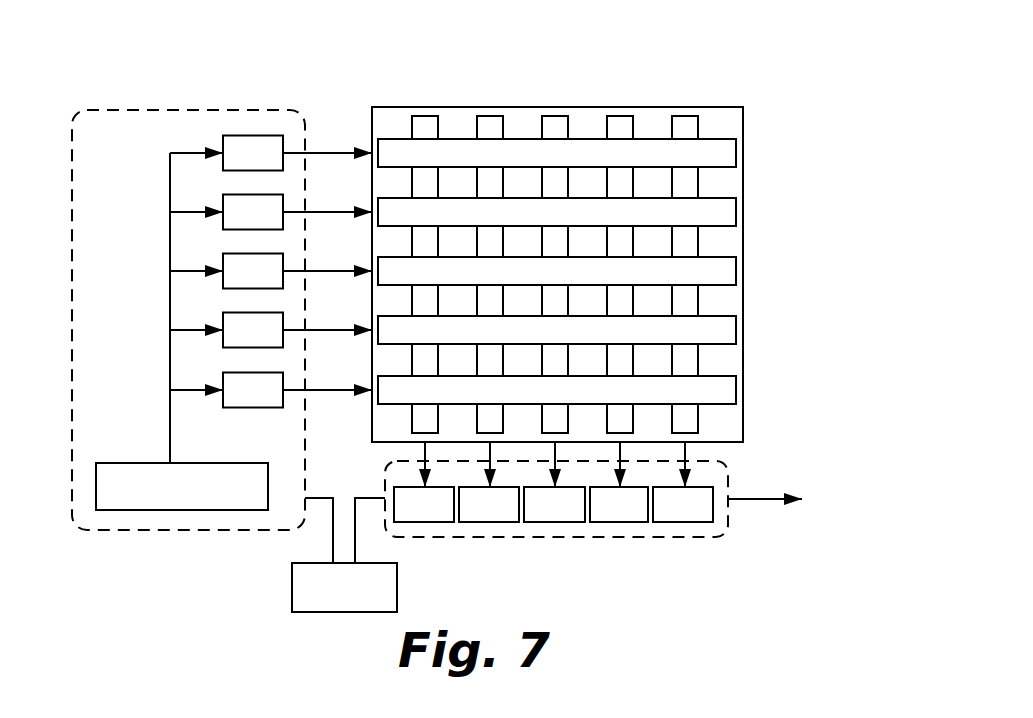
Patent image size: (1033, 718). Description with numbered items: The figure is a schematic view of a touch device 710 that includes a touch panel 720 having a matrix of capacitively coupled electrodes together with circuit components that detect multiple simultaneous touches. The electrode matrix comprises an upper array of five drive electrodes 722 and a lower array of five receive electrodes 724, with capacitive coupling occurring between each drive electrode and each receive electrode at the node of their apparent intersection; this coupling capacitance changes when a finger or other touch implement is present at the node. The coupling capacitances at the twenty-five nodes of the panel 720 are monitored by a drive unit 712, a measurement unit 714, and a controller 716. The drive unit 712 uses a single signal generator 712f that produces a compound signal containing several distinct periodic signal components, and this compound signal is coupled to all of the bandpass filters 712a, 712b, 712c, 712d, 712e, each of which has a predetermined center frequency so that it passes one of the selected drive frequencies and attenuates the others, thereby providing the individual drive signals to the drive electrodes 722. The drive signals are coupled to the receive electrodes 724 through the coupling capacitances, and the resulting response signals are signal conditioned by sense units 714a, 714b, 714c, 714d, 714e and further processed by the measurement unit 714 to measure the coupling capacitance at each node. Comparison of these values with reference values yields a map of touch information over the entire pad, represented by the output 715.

The touch device 710 is at (745, 53).
The drive unit 712 is at (167, 110).
The bandpass filter 712a is at (271, 147).
The bandpass filter 712b is at (271, 206).
The bandpass filter 712c is at (271, 265).
The bandpass filter 712d is at (271, 324).
The bandpass filter 712e is at (271, 384).
The signal generator 712f is at (205, 463).
The measurement unit 714 is at (593, 537).
The sense unit 714a is at (424, 482).
The sense unit 714b is at (489, 482).
The sense unit 714c is at (554, 482).
The sense unit 714d is at (619, 482).
The sense unit 714e is at (683, 482).
The output 715 is at (752, 500).
The controller 716 is at (344, 555).
The touch panel 720 is at (595, 246).
The drive electrodes 722 is at (598, 275).
The receive electrodes 724 is at (700, 97).